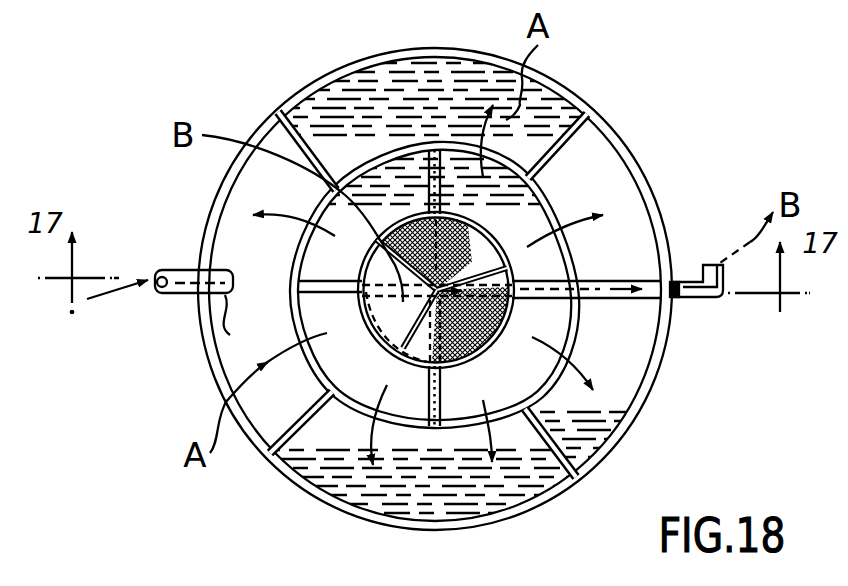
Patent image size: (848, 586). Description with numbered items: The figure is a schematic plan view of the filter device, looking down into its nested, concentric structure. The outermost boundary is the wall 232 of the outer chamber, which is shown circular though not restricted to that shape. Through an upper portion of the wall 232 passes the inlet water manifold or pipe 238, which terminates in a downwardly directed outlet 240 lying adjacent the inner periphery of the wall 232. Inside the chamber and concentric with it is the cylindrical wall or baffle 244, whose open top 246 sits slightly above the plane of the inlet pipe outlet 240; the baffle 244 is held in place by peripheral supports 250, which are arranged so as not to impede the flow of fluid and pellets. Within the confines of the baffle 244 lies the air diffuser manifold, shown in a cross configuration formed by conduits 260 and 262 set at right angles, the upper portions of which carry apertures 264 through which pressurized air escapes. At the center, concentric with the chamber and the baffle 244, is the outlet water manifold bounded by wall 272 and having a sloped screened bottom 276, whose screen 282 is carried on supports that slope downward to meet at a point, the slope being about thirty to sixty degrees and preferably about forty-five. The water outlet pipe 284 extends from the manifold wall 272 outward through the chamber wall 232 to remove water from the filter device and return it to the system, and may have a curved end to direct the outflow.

The wall 232 is at (577, 93).
The inlet water manifold or pipe 238 is at (163, 300).
The downwardly directed outlet 240 is at (243, 340).
The cylindrical wall or baffle 244 is at (550, 197).
The top 246 is at (578, 258).
The peripheral supports 250 is at (578, 130).
The conduit 260 is at (318, 282).
The conduit 262 is at (398, 175).
The apertures 264 is at (447, 418).
The wall 272 is at (357, 400).
The sloped screened bottom 276 is at (372, 342).
The screen 282 is at (510, 315).
The water outlet pipe 284 is at (687, 298).